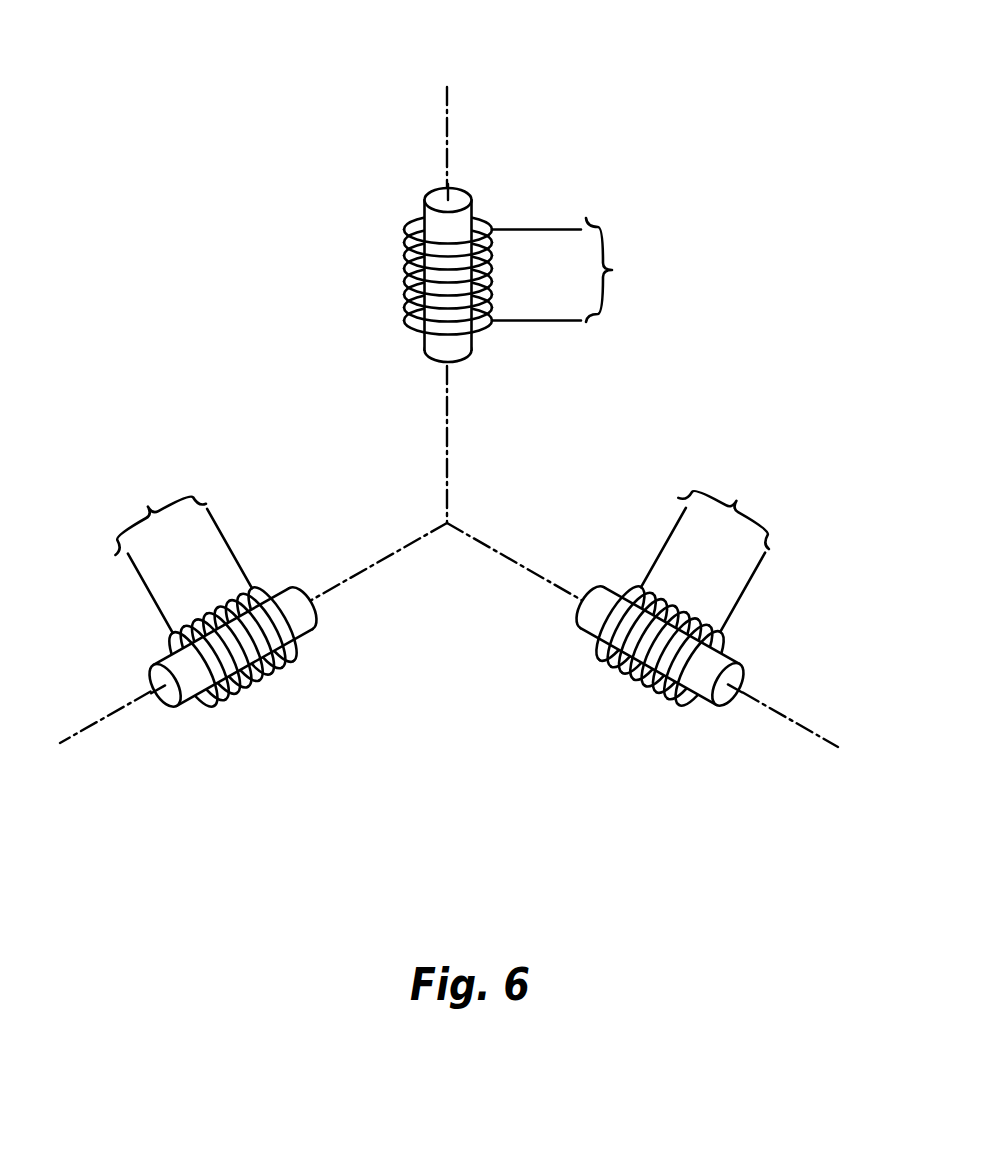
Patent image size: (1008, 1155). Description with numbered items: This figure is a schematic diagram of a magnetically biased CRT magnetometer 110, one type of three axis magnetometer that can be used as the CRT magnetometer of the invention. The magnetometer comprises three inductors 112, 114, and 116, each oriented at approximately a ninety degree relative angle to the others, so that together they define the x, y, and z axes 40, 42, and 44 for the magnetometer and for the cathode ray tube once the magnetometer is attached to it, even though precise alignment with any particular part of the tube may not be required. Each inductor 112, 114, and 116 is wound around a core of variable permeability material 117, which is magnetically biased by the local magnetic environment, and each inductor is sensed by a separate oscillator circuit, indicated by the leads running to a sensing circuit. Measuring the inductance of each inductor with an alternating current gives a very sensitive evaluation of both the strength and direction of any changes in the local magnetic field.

The magnetically biased CRT magnetometer 110 is at (451, 468).
The inductor 112 is at (752, 580).
The inductor 114 is at (127, 588).
The inductor 116 is at (553, 231).
The core of variable permeability material 117 is at (409, 477).
The x axis 40 is at (770, 710).
The y axis 42 is at (100, 721).
The z axis 44 is at (447, 137).